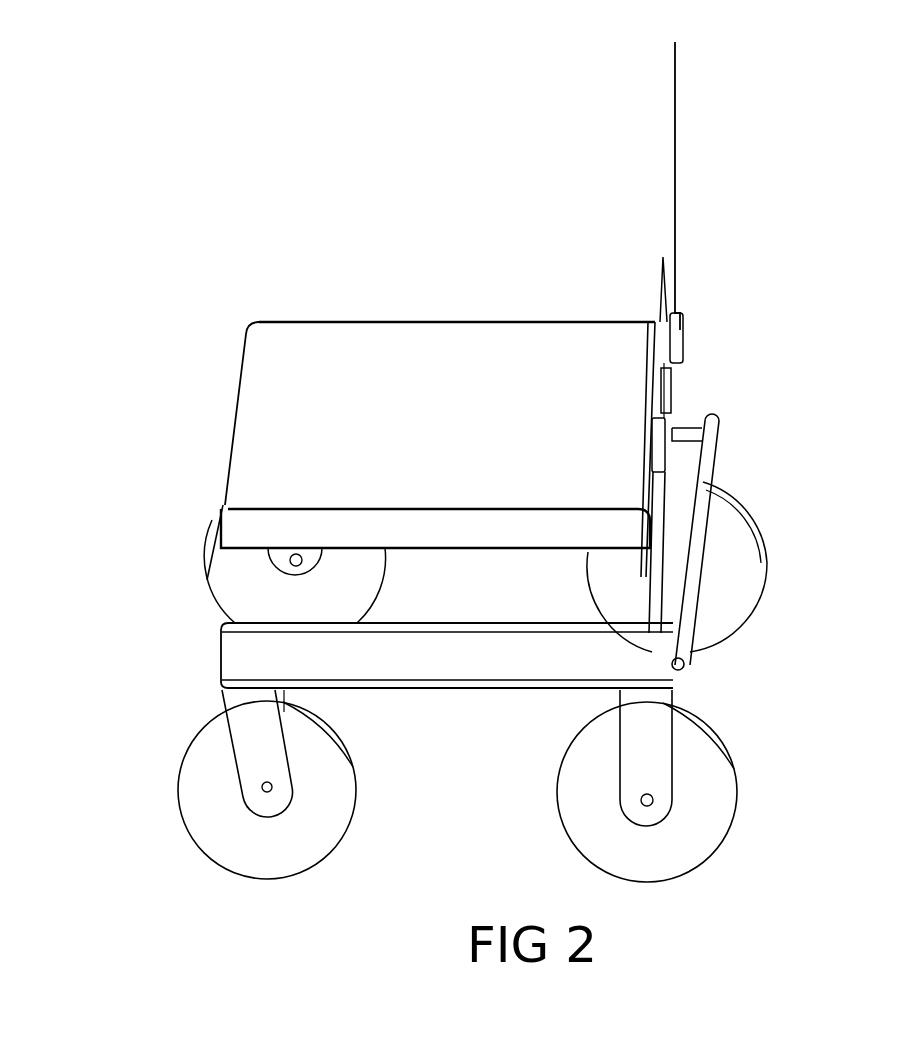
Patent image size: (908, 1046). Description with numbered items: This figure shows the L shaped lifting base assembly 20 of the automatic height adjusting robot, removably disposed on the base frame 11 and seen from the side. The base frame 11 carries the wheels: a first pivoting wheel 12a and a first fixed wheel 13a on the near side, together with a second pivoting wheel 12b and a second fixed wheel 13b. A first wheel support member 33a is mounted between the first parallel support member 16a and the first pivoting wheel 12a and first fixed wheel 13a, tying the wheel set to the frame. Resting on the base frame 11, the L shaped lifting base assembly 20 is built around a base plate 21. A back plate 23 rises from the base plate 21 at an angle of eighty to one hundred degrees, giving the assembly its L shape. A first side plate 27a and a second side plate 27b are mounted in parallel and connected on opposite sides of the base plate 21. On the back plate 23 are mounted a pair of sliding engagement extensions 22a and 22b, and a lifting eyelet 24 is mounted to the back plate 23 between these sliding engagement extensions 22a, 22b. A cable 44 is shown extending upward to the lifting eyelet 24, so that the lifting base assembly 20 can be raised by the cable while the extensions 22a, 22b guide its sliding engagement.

The base frame 11 is at (212, 651).
The first pivoting wheel 12a is at (236, 847).
The second pivoting wheel 12b is at (230, 582).
The first fixed wheel 13a is at (697, 837).
The second fixed wheel 13b is at (715, 627).
The first parallel support member 16a is at (660, 635).
The L shaped lifting base assembly 20 is at (336, 402).
The base plate 21 is at (270, 398).
The sliding engagement extension 22a is at (658, 452).
The sliding engagement extension 22b is at (678, 336).
The back plate 23 is at (655, 408).
The lifting eyelet 24 is at (678, 433).
The first side plate 27a is at (247, 527).
The second side plate 27b is at (277, 338).
The first wheel support member 33a is at (647, 680).
The cable 44 is at (670, 213).